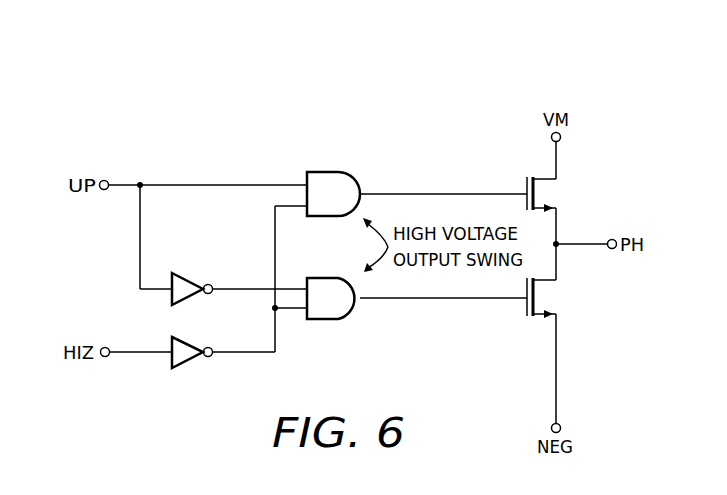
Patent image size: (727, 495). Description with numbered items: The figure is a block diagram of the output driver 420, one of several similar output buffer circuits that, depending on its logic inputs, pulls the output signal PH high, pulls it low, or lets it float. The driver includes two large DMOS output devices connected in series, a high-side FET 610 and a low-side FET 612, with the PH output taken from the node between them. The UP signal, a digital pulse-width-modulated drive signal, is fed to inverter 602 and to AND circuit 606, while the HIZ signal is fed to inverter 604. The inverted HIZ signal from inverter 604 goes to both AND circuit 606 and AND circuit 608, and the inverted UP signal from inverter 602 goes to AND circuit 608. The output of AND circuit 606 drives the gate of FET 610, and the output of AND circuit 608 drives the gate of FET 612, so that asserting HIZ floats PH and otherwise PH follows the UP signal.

The output driver 420 is at (134, 98).
The inverter 602 is at (197, 275).
The inverter 604 is at (195, 366).
The AND circuit 606 is at (326, 171).
The AND circuit 608 is at (327, 321).
The high-side FET 610 is at (525, 184).
The low-side FET 612 is at (525, 309).